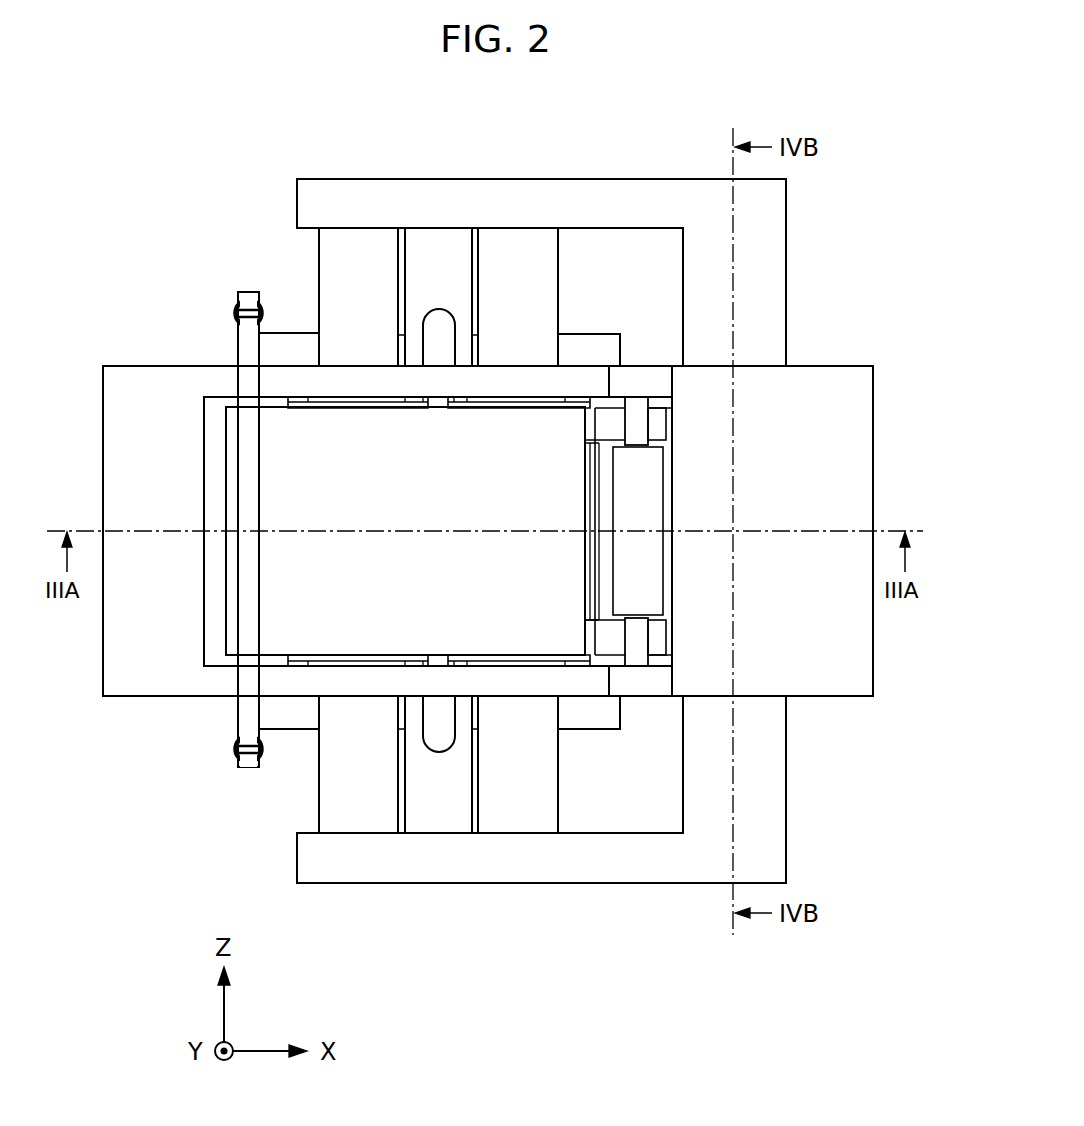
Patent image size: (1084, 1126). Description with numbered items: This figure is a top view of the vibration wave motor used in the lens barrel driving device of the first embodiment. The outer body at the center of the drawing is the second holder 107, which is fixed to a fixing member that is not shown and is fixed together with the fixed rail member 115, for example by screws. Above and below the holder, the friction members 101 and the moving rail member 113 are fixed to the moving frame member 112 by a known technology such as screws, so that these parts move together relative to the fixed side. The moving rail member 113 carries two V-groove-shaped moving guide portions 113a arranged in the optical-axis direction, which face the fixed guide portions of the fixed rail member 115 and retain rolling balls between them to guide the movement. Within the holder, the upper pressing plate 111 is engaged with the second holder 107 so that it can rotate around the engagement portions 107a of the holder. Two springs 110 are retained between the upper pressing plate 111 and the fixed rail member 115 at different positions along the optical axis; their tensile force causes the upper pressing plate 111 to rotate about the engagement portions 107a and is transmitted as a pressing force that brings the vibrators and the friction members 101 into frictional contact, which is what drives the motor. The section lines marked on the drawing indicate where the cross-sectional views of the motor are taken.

The friction member 101 is at (353, 237).
The second holder 107 is at (530, 545).
The engagement portion 107a is at (642, 640).
The spring 110 is at (235, 312).
The upper pressing plate 111 is at (238, 444).
The moving frame member 112 is at (770, 241).
The moving rail member 113 is at (439, 545).
The moving guide portion 113a is at (440, 740).
The fixed rail member 115 is at (592, 347).